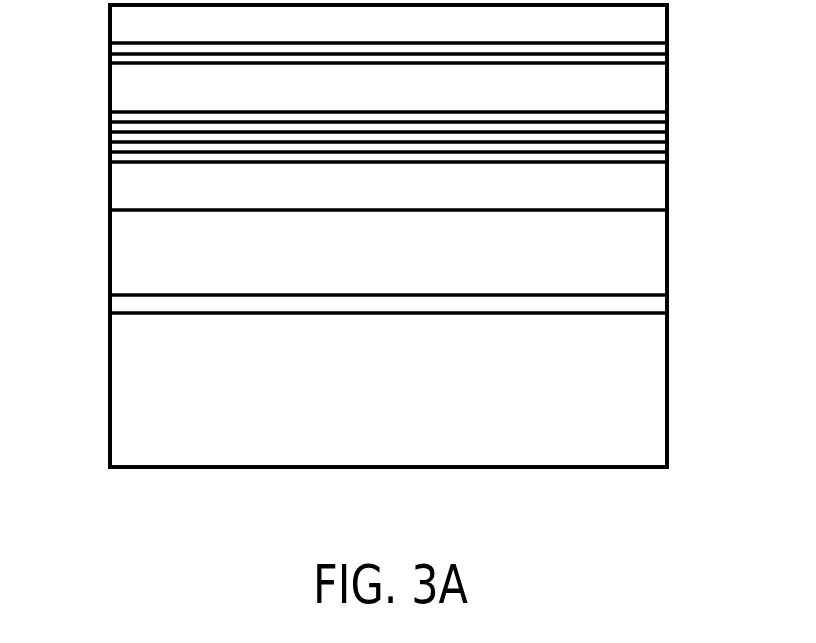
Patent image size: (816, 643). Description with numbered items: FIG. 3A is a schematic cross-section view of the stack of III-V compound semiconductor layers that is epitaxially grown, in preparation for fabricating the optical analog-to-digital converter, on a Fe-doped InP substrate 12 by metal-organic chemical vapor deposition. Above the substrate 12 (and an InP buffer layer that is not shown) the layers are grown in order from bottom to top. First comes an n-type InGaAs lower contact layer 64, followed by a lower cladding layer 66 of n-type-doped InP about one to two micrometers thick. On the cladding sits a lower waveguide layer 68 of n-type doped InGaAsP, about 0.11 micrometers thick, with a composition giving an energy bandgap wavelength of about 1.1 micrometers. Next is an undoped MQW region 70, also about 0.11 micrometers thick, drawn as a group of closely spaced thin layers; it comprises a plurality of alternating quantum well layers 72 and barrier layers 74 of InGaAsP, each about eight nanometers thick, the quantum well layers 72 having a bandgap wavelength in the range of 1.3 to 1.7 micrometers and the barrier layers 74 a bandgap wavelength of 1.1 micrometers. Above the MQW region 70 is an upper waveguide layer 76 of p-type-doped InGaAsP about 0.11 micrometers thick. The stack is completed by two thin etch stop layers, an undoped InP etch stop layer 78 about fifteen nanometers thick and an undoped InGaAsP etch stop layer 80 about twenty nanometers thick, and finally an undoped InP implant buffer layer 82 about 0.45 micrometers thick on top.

The substrate 12 is at (180, 427).
The lower contact layer 64 is at (110, 300).
The lower cladding layer 66 is at (180, 262).
The lower waveguide layer 68 is at (180, 197).
The MQW region 70 is at (672, 112).
The quantum well layers 72 is at (110, 153).
The barrier layers 74 is at (110, 153).
The upper waveguide layer 76 is at (180, 100).
The InP etch stop layer 78 is at (110, 60).
The InGaAsP etch stop layer 80 is at (669, 50).
The implant buffer layer 82 is at (180, 37).